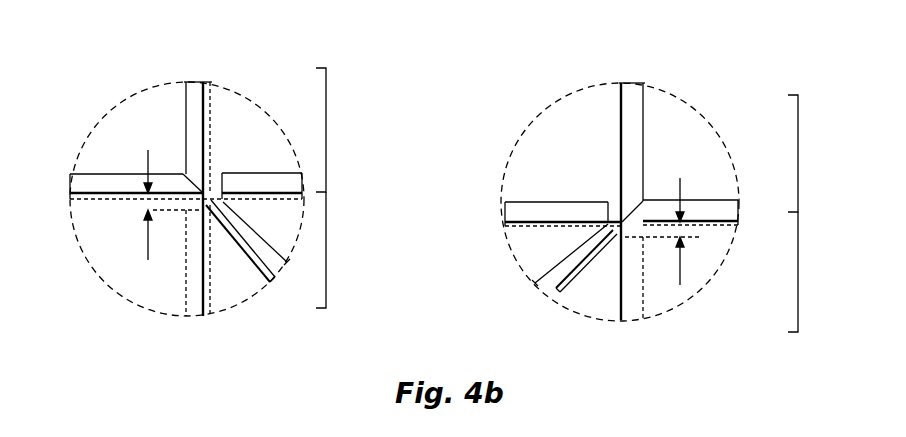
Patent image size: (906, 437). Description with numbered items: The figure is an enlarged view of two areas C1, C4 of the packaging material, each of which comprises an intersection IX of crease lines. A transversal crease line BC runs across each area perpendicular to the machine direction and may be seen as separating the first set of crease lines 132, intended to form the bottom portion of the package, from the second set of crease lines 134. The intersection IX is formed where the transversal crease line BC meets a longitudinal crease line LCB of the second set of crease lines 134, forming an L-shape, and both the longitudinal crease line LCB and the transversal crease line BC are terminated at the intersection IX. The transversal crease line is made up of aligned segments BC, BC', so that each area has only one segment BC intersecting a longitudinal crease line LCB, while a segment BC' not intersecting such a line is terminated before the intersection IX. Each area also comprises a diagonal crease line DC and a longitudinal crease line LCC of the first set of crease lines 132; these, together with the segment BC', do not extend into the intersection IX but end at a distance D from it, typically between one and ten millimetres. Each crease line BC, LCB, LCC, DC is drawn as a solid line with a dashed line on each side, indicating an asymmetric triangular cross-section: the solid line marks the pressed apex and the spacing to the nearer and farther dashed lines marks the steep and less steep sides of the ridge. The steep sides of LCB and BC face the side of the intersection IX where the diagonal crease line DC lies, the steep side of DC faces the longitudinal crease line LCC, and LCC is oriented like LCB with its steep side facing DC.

The area C1 is at (99, 124).
The area C4 is at (558, 108).
The longitudinal crease line LCB is at (209, 103).
The longitudinal crease line LCC is at (203, 258).
The transversal crease line BC is at (398, 211).
The segment of the transversal crease line BC' is at (421, 178).
The diagonal crease line DC is at (282, 277).
The intersection IX is at (215, 183).
The distance D is at (417, 217).
The second set of crease lines 134 is at (326, 128).
The first set of crease lines 132 is at (326, 248).